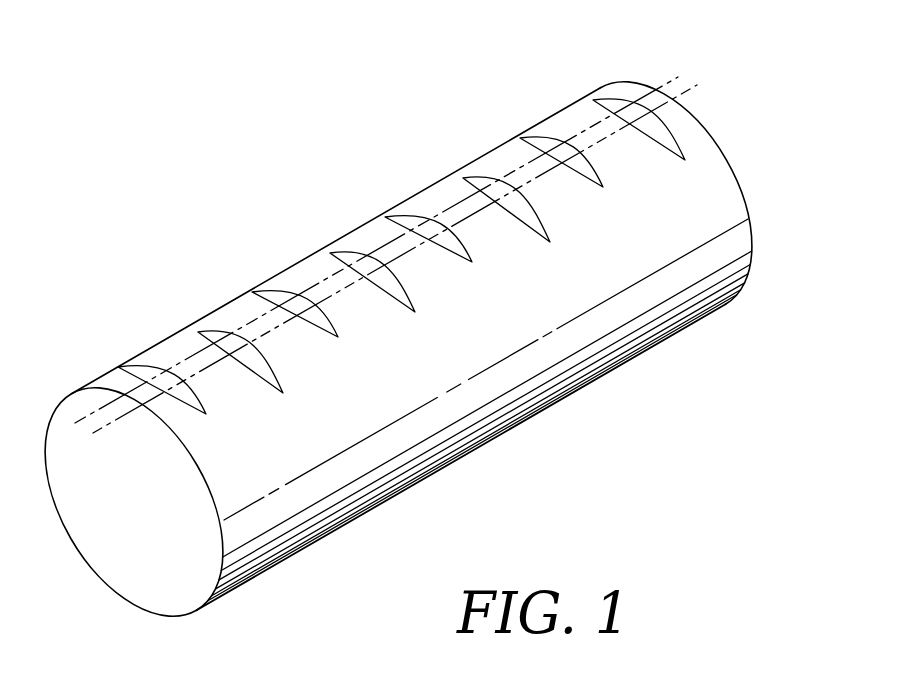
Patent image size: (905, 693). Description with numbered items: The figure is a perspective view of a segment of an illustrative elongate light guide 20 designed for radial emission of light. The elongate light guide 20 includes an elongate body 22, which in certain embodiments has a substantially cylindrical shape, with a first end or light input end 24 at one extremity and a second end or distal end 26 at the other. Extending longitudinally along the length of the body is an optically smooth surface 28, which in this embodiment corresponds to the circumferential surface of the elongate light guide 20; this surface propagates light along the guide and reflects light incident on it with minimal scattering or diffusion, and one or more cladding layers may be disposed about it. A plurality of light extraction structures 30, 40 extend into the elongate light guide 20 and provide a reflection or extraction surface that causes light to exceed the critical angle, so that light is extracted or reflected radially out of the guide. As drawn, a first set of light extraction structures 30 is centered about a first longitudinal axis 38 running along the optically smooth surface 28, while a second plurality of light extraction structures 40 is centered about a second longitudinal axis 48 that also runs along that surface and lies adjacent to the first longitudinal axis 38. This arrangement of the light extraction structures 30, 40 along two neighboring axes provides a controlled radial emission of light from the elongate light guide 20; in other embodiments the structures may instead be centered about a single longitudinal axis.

The elongate light guide 20 is at (330, 203).
The elongate body 22 is at (304, 498).
The light input end 24 is at (127, 563).
The distal end 26 is at (738, 177).
The optically smooth surface 28 is at (717, 205).
The first set of light extraction structures 30 is at (137, 370).
The first longitudinal axis 38 is at (677, 82).
The second plurality of light extraction structures 40 is at (262, 373).
The second longitudinal axis 48 is at (692, 88).